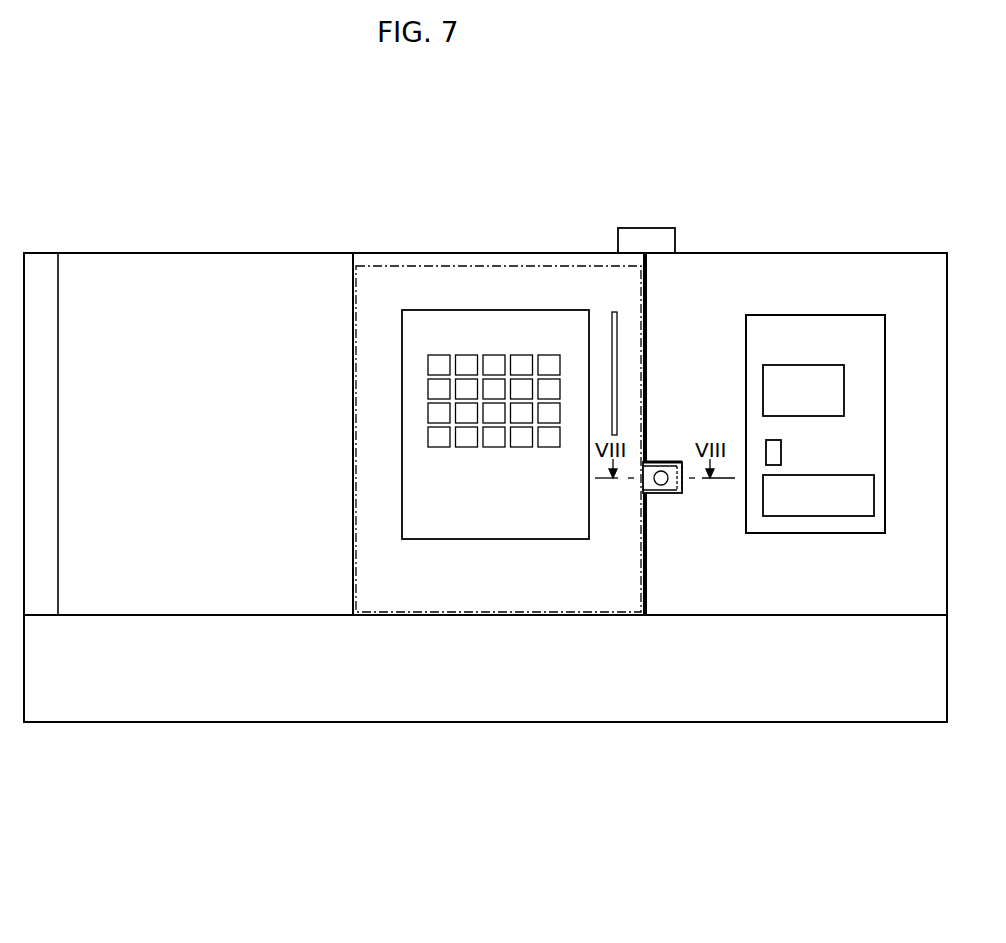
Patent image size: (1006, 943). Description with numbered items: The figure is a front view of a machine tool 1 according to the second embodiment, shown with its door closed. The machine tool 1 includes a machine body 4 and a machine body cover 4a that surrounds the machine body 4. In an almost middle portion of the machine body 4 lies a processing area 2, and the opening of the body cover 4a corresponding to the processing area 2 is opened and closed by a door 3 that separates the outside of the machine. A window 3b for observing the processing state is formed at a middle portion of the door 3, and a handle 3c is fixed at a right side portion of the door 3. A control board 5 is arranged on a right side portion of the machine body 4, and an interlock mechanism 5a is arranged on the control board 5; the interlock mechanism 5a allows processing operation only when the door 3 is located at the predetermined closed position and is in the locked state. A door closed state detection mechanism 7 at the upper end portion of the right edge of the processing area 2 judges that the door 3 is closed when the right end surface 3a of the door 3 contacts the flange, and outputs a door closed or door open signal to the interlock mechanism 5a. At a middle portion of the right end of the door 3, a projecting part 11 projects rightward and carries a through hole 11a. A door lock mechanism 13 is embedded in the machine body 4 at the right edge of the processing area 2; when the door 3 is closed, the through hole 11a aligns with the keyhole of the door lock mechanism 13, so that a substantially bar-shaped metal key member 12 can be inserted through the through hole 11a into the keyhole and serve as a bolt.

The machine tool 1 is at (197, 196).
The processing area 2 is at (388, 272).
The door 3 is at (508, 262).
The right end surface 3a is at (647, 600).
The window 3b is at (440, 360).
The handle 3c is at (612, 318).
The machine body 4 is at (758, 270).
The machine body cover 4a is at (920, 265).
The control board 5 is at (824, 330).
The interlock mechanism 5a is at (781, 449).
The door closed state detection mechanism 7 is at (663, 228).
The projecting part 11 is at (682, 492).
The through hole 11a is at (668, 492).
The key member 12 is at (665, 466).
The door lock mechanism 13 is at (650, 462).